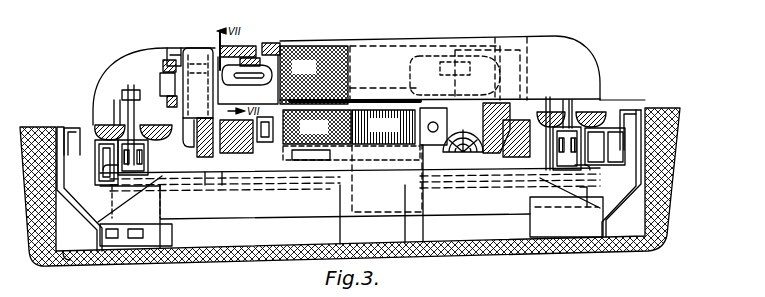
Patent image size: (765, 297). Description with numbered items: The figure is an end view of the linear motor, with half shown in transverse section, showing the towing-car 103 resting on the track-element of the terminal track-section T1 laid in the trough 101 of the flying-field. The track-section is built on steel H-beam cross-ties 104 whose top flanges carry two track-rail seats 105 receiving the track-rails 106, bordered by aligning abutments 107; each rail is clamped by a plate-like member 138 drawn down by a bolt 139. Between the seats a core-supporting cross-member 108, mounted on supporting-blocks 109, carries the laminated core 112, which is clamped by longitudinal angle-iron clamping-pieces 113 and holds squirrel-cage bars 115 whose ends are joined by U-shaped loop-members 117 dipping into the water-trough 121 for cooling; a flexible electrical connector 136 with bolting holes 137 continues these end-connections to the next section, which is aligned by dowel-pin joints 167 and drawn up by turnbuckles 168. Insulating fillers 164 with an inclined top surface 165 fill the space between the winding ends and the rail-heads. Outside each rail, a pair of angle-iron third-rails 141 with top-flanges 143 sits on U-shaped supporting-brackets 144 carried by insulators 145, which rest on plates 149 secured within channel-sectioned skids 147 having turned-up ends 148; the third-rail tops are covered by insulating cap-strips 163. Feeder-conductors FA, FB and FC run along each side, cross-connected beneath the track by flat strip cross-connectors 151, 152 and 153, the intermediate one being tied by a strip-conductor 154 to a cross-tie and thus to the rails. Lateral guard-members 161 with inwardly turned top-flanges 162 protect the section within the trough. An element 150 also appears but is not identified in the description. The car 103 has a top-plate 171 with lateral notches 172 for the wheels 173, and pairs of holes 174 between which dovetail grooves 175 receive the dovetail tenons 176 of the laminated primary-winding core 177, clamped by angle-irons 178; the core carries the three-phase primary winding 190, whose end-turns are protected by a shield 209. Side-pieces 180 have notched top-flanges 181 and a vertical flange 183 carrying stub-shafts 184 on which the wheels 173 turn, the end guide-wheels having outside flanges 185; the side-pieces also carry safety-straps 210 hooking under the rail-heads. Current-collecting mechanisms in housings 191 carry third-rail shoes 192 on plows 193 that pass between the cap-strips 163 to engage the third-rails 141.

The trough 101 is at (68, 260).
The towing-car 103 is at (412, 33).
The cross-ties 104 is at (232, 220).
The track-rail seats 105 is at (350, 181).
The track-rails 106 is at (200, 157).
The abutments 107 is at (553, 140).
The core-supporting cross-member 108 is at (317, 127).
The supporting-blocks 109 is at (351, 154).
The laminated core 112 is at (363, 100).
The angle-iron clamping-pieces 113 is at (248, 178).
The squirrel-cage bars 115 is at (415, 100).
The U-shaped loop-members 117 is at (269, 136).
The water-trough 121 is at (236, 136).
The flexible electrical connector 136 is at (433, 130).
The holes 137 is at (428, 125).
The plate-like member 138 is at (207, 185).
The bolt or screw 139 is at (223, 185).
The third-rails 141 is at (95, 124).
The top-flanges 143 is at (640, 110).
The U-shaped supporting-brackets 144 is at (168, 186).
The insulators 145 is at (112, 195).
The channel-sectioned skids 147 is at (512, 224).
The turned-up ends 148 is at (555, 212).
The plates 149 is at (136, 235).
The sensor stack 150 is at (99, 172).
The top cross-connector 151 is at (390, 207).
The intermediate cross-connector 152 is at (280, 180).
The bottom cross-connector 153 is at (300, 188).
The strip-conductor 154 is at (364, 214).
The lateral guard-members 161 is at (349, 180).
The top-flanges 162 is at (55, 125).
The insulating cap-strips 163 is at (603, 98).
The insulating fillers 164 is at (475, 68).
The inclined top surface 165 is at (484, 100).
The dowel-pin joints 167 is at (400, 185).
The turnbuckles 168 is at (446, 196).
The top-plate 171 is at (246, 46).
The lateral notches 172 is at (207, 48).
The wheels 173 is at (178, 48).
The pairs of holes 174 is at (270, 43).
The dovetail grooves 175 is at (373, 44).
The dovetail tenons 176 is at (342, 44).
The primary-winding core 177 is at (322, 46).
The angle-irons 178 is at (300, 44).
The side-pieces 180 is at (165, 64).
The top-flanges 181 is at (495, 44).
The vertical flange 183 is at (527, 60).
The stub-shafts 184 is at (160, 78).
The flanges 185 is at (498, 88).
The three-phase primary winding 190 is at (236, 78).
The housings 191 is at (110, 63).
The third-rail shoes 192 is at (572, 97).
The plows or support-members 193 is at (566, 100).
The shield or guard 209 is at (200, 72).
The safety-straps 210 is at (200, 85).
The feeder-conductor FA is at (99, 160).
The feeder-conductor FB is at (103, 150).
The feeder-conductor FC is at (95, 183).
The terminal track-section T1 is at (373, 230).